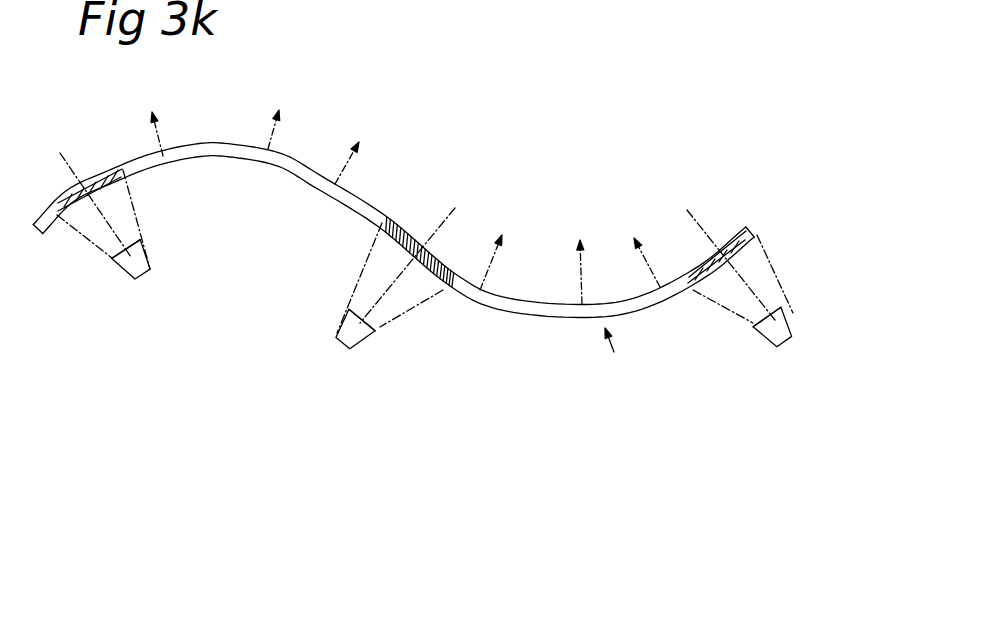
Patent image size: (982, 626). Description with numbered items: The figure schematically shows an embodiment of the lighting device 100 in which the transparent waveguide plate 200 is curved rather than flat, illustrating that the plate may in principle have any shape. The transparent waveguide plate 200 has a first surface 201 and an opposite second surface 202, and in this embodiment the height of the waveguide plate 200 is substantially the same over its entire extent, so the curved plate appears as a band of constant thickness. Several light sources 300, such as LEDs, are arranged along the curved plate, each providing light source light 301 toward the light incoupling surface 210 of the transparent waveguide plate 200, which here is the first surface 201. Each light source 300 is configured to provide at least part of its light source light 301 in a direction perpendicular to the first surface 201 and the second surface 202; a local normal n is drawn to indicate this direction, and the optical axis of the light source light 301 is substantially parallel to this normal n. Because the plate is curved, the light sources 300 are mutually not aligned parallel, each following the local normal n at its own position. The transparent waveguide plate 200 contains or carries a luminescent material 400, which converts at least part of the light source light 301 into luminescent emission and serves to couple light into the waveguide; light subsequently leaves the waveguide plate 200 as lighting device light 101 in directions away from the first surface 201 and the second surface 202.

The lighting device 100 is at (722, 215).
The lighting device light 101 is at (342, 155).
The transparent waveguide plate 200 is at (614, 352).
The first surface 201 is at (513, 314).
The second surface 202 is at (202, 142).
The light incoupling surface 210 is at (423, 266).
The light source 300 is at (140, 272).
The light source light 301 is at (111, 257).
The luminescent material 400 is at (105, 168).
The normal n is at (63, 153).